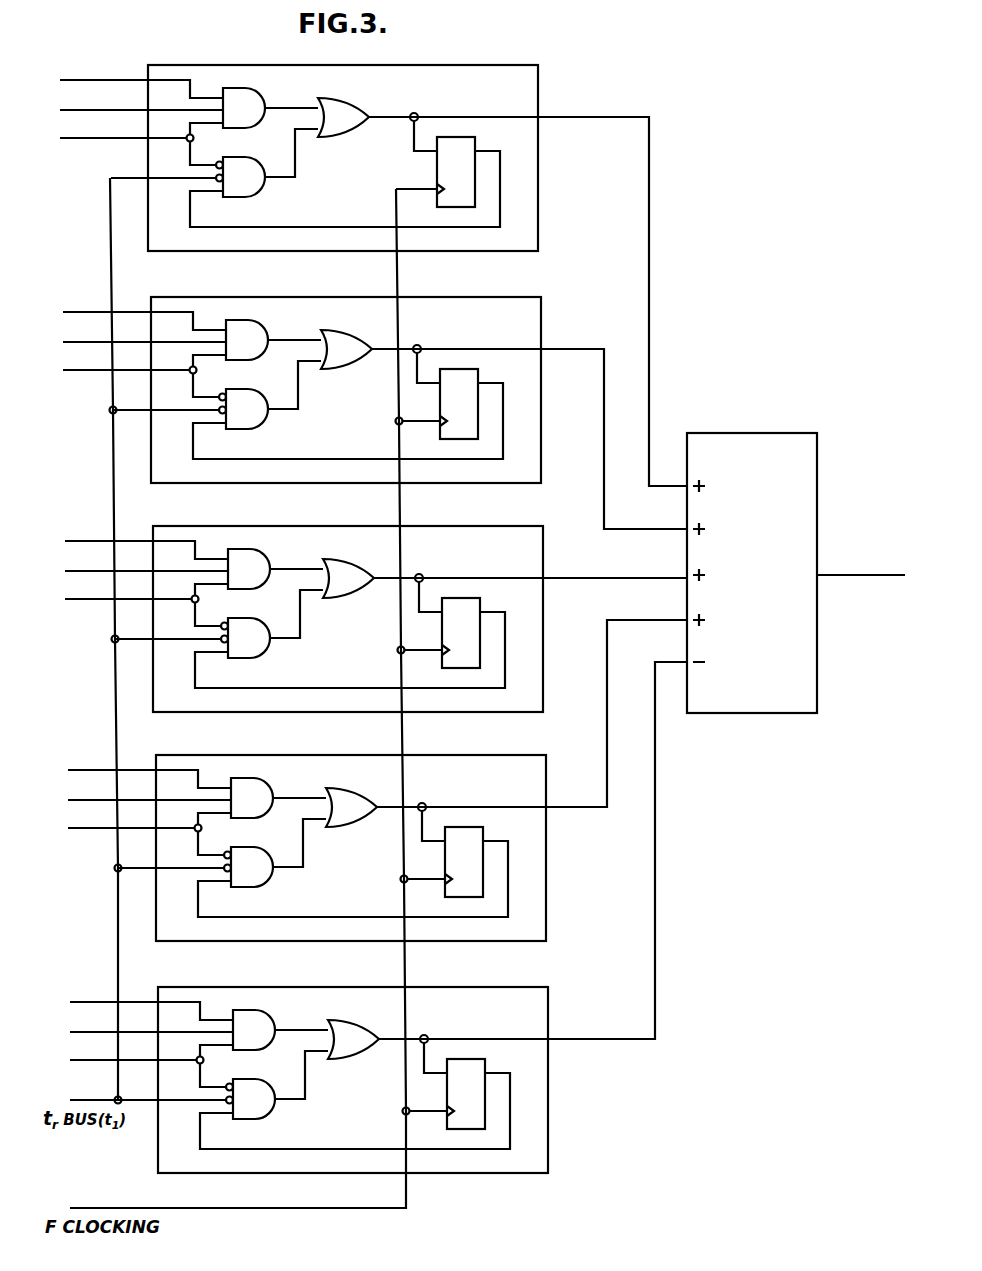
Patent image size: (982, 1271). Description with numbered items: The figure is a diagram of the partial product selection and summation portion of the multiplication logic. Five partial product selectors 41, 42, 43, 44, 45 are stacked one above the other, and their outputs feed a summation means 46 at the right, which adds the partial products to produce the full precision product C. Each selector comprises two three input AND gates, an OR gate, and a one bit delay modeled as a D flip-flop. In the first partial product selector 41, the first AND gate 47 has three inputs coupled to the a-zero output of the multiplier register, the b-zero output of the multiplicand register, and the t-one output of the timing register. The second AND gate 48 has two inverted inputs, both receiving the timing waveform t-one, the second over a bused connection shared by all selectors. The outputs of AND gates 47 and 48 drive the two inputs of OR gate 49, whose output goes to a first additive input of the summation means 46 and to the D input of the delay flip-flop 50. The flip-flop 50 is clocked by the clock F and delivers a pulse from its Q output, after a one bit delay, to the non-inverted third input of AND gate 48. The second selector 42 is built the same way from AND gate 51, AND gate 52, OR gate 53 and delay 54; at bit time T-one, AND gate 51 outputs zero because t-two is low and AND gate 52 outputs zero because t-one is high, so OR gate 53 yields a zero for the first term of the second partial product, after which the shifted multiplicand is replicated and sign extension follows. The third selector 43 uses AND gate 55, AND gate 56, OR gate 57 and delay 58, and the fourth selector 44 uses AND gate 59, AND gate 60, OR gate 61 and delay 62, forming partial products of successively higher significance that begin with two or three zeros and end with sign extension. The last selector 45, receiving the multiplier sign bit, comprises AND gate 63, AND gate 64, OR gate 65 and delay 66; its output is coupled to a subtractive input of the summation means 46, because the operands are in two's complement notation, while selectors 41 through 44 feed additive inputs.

The first partial product selector 41 is at (285, 138).
The second partial product selector 42 is at (311, 390).
The third partial product selector 43 is at (311, 619).
The fourth partial product selector 44 is at (315, 846).
The last partial product selector 45 is at (320, 1080).
The summation means 46 is at (752, 433).
The first AND gate 47 is at (270, 103).
The second AND gate 48 is at (267, 170).
The OR gate 49 is at (428, 108).
The one bit delay 50 is at (476, 165).
The AND gate 51 is at (273, 332).
The AND gate 52 is at (270, 395).
The OR gate 53 is at (431, 339).
The one bit delay 54 is at (478, 396).
The AND gate 55 is at (275, 561).
The AND gate 56 is at (272, 622).
The OR gate 57 is at (433, 568).
The one bit delay 58 is at (481, 627).
The AND gate 59 is at (278, 791).
The AND gate 60 is at (275, 853).
The OR gate 61 is at (436, 796).
The one bit delay 62 is at (484, 856).
The AND gate 63 is at (280, 1025).
The AND gate 64 is at (277, 1085).
The OR gate 65 is at (438, 1028).
The one bit delay 66 is at (487, 1091).